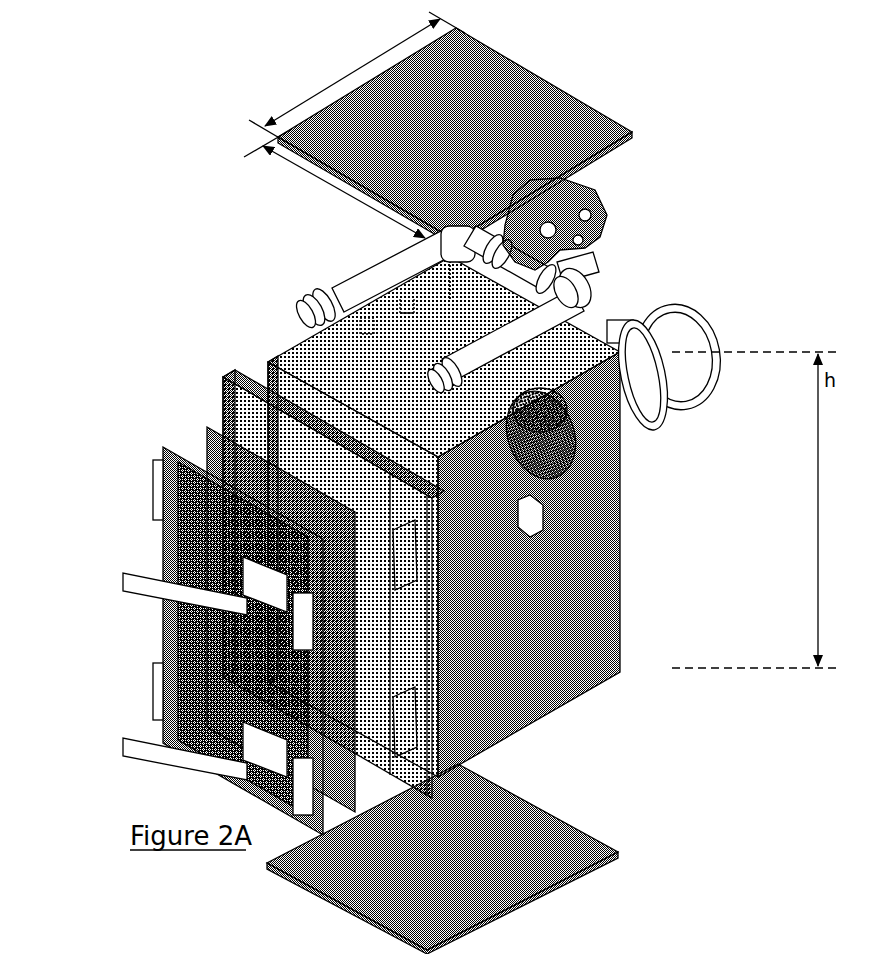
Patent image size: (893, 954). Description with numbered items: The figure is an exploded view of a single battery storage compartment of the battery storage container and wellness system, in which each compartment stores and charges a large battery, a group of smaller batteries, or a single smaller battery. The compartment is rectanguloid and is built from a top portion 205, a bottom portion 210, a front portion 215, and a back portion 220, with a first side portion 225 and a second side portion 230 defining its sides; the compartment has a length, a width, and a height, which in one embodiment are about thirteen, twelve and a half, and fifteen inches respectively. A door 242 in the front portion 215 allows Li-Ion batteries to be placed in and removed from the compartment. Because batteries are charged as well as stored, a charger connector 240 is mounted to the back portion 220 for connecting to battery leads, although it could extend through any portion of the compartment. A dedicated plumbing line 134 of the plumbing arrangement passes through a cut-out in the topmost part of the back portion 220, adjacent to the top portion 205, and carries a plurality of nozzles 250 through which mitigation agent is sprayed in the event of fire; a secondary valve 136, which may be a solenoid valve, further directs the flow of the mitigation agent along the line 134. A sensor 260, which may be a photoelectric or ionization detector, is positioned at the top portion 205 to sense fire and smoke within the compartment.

The secondary plumbing line 134 is at (577, 300).
The secondary valve 136 is at (597, 240).
The top portion 205 is at (530, 90).
The bottom portion 210 is at (612, 862).
The front portion 215 is at (176, 407).
The back portion 220 is at (630, 570).
The first side portion 225 is at (580, 596).
The second side portion 230 is at (282, 340).
The charger connector 240 is at (535, 507).
The door 242 is at (196, 520).
The nozzles 250 is at (360, 305).
The sensor 260 is at (406, 120).